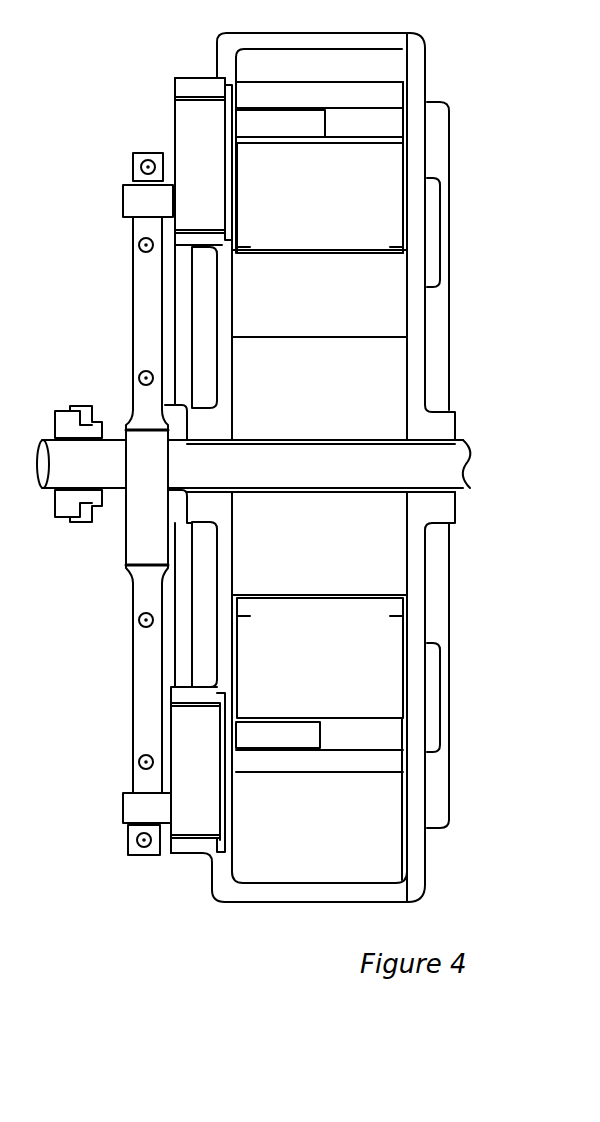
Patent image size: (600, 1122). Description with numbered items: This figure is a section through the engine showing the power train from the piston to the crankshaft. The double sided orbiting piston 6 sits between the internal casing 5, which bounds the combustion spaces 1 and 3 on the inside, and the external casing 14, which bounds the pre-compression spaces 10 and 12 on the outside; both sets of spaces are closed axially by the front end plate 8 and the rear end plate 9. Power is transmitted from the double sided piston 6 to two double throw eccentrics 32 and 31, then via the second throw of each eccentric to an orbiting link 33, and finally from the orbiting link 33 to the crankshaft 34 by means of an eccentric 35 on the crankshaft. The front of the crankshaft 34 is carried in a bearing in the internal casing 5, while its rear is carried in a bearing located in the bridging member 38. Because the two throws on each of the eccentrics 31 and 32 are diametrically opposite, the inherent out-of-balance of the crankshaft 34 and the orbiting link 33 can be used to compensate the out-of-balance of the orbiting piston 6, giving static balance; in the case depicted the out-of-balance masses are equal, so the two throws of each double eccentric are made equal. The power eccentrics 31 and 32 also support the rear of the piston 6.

The combustion space 1 is at (319, 311).
The combustion space 3 is at (396, 601).
The internal casing 5 is at (319, 400).
The double sided orbiting piston 6 is at (319, 429).
The front end plate 8 is at (438, 465).
The rear end plate 9 is at (204, 467).
The pre-compression space 10 is at (319, 80).
The pre-compression space 12 is at (319, 799).
The external casing 14 is at (310, 33).
The double throw eccentric 31 is at (203, 161).
The double throw eccentric 32 is at (198, 770).
The orbiting link 33 is at (148, 504).
The crankshaft 34 is at (253, 464).
The eccentric 35 is at (147, 497).
The bridging member 38 is at (78, 408).